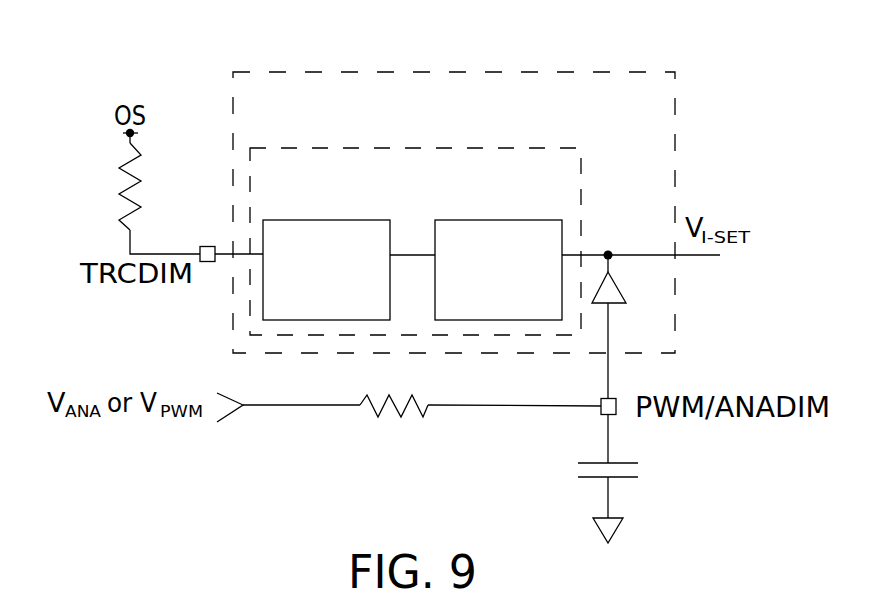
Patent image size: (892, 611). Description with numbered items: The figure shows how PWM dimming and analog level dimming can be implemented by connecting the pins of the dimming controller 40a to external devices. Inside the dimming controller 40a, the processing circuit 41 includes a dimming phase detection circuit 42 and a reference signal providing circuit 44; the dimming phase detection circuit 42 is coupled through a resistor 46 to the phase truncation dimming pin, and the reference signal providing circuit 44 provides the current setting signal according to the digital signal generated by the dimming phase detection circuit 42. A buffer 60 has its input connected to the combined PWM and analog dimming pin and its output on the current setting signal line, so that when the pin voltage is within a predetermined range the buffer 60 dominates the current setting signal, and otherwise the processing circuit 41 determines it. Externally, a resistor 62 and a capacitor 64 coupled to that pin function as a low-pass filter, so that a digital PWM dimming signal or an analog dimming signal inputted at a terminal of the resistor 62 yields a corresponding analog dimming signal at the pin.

The dimming controller 40a is at (418, 72).
The processing circuit 41 is at (430, 195).
The dimming phase detection circuit 42 is at (340, 284).
The reference signal providing circuit 44 is at (513, 284).
The resistor 46 is at (116, 188).
The buffer 60 is at (601, 305).
The resistor 62 is at (391, 420).
The capacitor 64 is at (576, 470).